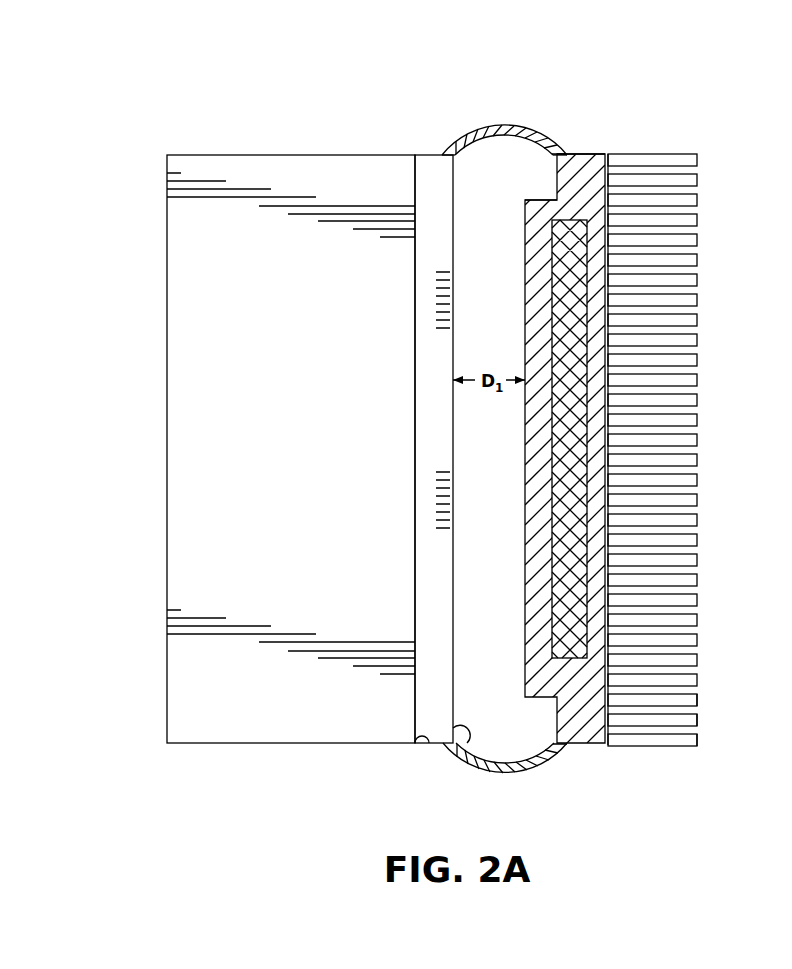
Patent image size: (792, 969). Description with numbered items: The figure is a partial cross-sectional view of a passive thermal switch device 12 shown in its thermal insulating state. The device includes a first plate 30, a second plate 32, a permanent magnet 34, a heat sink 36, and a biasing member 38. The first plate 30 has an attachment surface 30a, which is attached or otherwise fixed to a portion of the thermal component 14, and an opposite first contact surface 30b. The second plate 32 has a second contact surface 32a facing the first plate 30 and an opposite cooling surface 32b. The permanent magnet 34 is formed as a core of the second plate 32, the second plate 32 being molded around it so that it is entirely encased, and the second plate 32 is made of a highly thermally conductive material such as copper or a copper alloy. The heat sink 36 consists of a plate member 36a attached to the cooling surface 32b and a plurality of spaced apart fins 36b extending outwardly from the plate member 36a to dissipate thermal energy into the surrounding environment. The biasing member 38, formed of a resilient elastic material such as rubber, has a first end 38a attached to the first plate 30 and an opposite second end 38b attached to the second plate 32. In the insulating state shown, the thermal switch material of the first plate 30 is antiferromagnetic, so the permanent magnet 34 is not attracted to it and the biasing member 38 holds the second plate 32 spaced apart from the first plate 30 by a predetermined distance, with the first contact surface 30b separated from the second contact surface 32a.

The passive thermal switch device 12 is at (606, 104).
The thermal component 14 is at (261, 146).
The first plate 30 is at (432, 155).
The attachment surface 30a is at (422, 745).
The first contact surface 30b is at (455, 745).
The second plate 32 is at (590, 146).
The second contact surface 32a is at (524, 218).
The cooling surface 32b is at (607, 154).
The permanent magnet 34 is at (572, 228).
The heat sink 36 is at (716, 240).
The plate member 36a is at (606, 738).
The fins 36b is at (697, 742).
The biasing member 38 is at (503, 116).
The first end 38a is at (452, 155).
The second end 38b is at (566, 154).